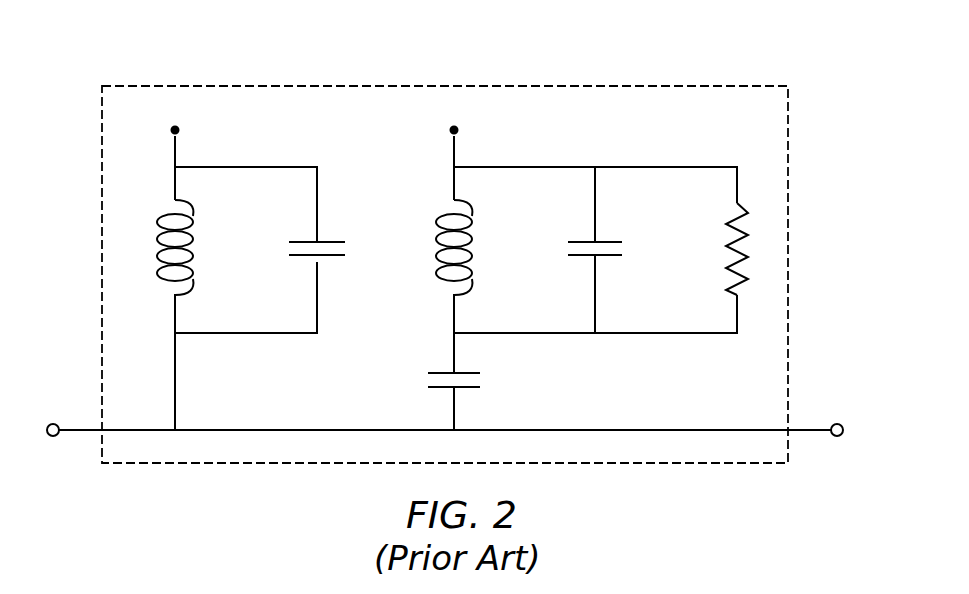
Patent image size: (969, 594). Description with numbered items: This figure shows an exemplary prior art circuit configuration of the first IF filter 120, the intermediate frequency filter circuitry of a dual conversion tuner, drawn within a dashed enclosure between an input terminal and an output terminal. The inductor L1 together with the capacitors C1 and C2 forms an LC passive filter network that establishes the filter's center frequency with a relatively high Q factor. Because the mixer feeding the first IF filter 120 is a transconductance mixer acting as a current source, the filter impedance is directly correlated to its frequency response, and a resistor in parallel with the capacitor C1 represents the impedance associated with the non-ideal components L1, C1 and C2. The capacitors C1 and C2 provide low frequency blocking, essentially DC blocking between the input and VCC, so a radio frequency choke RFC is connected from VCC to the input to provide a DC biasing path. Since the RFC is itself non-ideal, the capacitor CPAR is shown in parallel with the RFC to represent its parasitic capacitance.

The first IF filter 120 is at (790, 129).
The radio frequency choke RFC is at (154, 266).
The capacitor CPAR is at (336, 253).
The inductor L1 is at (441, 286).
The capacitor C1 is at (610, 250).
The capacitor C2 is at (469, 383).